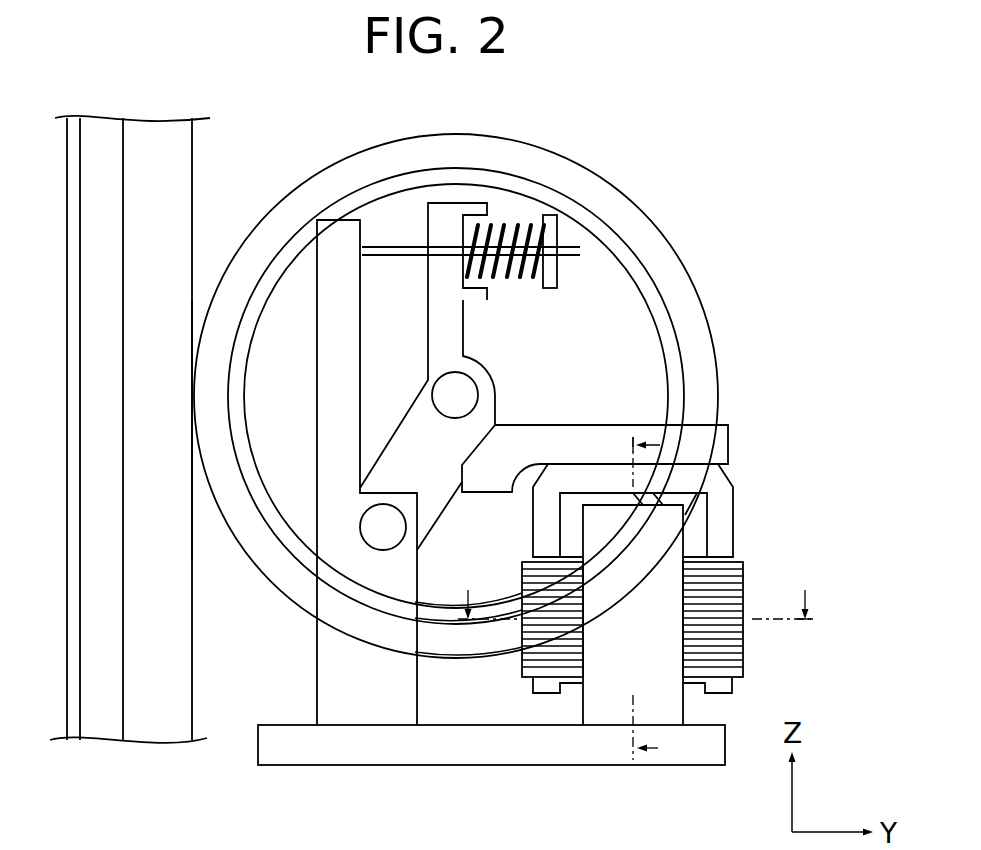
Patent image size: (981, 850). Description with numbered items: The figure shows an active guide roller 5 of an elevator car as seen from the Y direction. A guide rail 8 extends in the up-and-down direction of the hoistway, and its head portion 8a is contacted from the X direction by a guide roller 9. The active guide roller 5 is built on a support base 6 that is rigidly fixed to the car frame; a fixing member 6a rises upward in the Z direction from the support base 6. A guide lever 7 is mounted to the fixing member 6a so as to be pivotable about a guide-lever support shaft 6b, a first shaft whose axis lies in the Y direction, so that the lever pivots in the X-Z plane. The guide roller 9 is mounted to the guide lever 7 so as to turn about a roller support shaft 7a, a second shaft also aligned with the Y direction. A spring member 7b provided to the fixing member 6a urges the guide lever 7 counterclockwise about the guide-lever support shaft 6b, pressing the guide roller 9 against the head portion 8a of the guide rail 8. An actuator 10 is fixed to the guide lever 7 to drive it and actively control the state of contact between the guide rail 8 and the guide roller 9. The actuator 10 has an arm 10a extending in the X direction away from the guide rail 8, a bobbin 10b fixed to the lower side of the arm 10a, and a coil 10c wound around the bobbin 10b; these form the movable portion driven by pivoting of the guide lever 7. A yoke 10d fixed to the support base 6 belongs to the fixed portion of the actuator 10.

The active guide roller 5 is at (742, 257).
The support base 6 is at (292, 757).
The fixing member 6a is at (335, 680).
The guide-lever support shaft 6b is at (375, 529).
The guide lever 7 is at (496, 353).
The roller support shaft 7a is at (465, 387).
The spring member 7b is at (558, 227).
The guide rail 8 is at (158, 118).
The head portion 8a is at (178, 165).
The guide roller 9 is at (647, 222).
The actuator 10 is at (653, 574).
The arm 10a is at (720, 437).
The bobbin 10b is at (733, 503).
The coil 10c is at (743, 657).
The yoke 10d is at (673, 533).